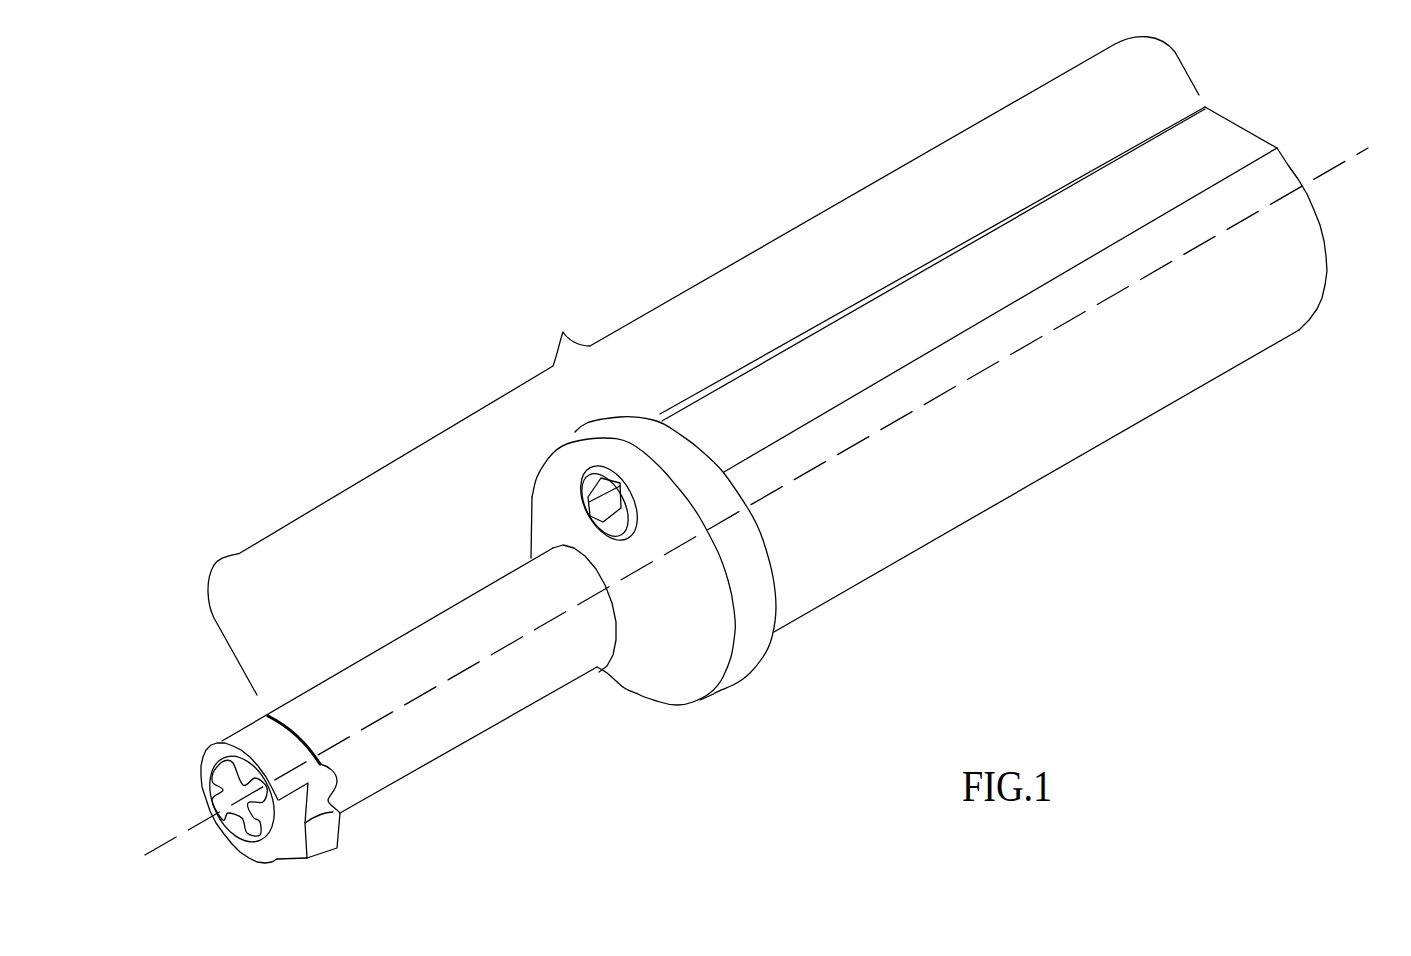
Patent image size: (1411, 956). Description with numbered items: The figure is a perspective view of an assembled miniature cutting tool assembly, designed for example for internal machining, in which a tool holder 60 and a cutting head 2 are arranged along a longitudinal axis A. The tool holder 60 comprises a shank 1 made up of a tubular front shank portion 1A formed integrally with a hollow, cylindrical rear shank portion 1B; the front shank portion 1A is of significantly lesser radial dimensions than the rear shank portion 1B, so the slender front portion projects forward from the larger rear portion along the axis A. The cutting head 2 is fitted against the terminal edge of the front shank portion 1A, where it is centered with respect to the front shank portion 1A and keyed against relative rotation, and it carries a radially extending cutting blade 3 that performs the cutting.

The shank 1 is at (725, 347).
The front shank portion 1A is at (372, 652).
The rear shank portion 1B is at (876, 296).
The cutting head 2 is at (222, 718).
The cutting blade 3 is at (341, 814).
The tool holder 60 is at (703, 366).
The longitudinal axis A is at (766, 487).